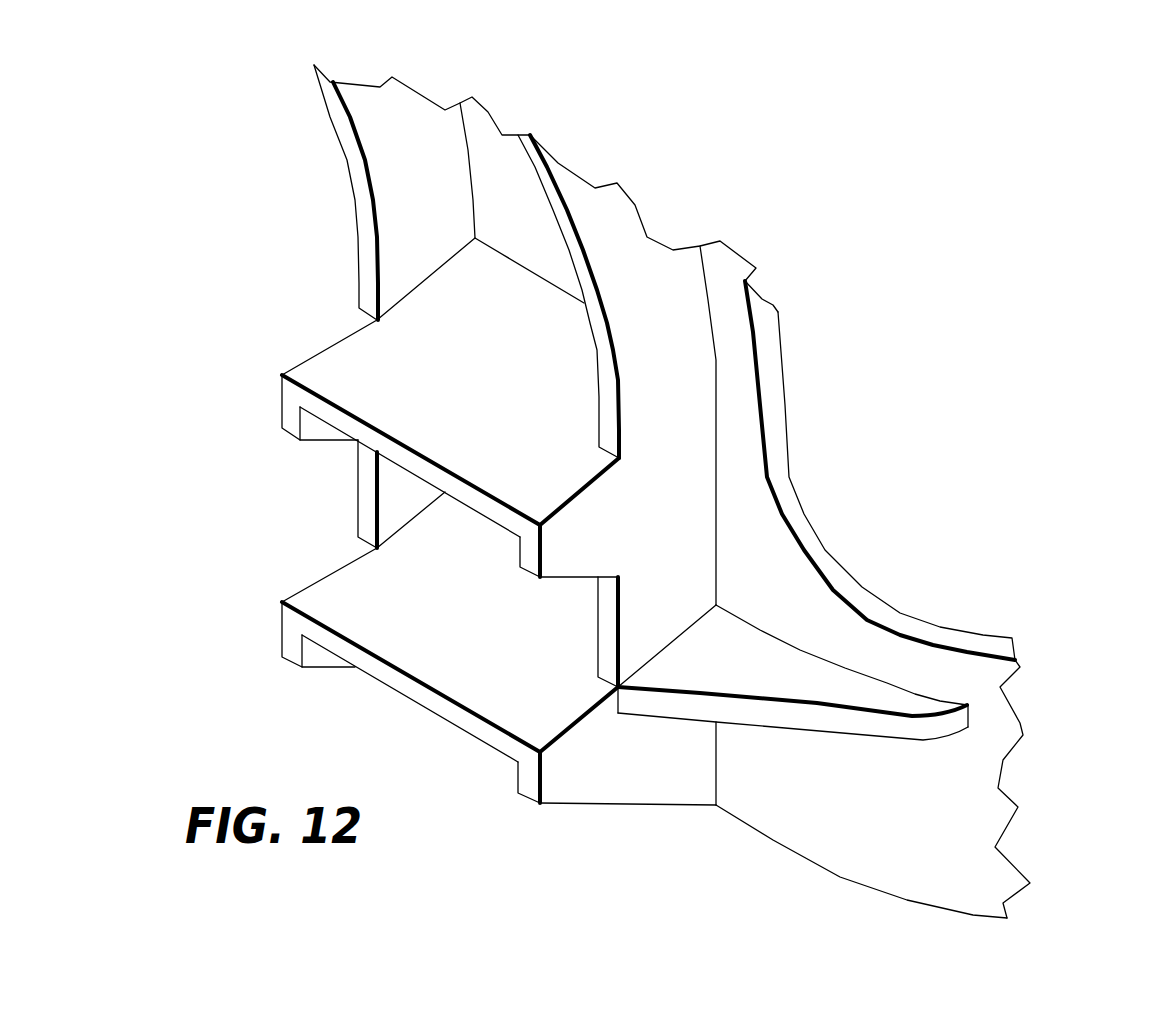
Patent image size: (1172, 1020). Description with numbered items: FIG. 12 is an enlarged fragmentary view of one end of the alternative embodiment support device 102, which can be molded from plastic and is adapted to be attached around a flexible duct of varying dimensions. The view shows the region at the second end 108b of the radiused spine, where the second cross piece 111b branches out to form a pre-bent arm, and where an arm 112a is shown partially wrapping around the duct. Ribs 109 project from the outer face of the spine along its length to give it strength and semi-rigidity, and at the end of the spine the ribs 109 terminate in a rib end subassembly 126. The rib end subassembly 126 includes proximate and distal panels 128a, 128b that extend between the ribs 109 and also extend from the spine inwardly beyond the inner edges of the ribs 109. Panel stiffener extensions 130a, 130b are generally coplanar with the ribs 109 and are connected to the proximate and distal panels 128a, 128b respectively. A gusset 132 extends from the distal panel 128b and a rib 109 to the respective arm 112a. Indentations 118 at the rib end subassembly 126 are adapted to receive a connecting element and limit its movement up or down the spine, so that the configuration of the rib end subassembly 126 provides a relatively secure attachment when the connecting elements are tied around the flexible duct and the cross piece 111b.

The support device 102 is at (333, 230).
The ribs 109 is at (448, 194).
The indentations 118 is at (327, 492).
The proximate panel 128a is at (548, 464).
The distal panel 128b is at (435, 591).
The panel stiffener extension 130a is at (282, 429).
The panel stiffener extension 130b is at (282, 658).
The gusset 132 is at (763, 673).
The rib end subassembly 126 is at (540, 805).
The second cross piece 111b is at (795, 870).
The first arm 112a is at (947, 625).
The second end 108b is at (352, 723).